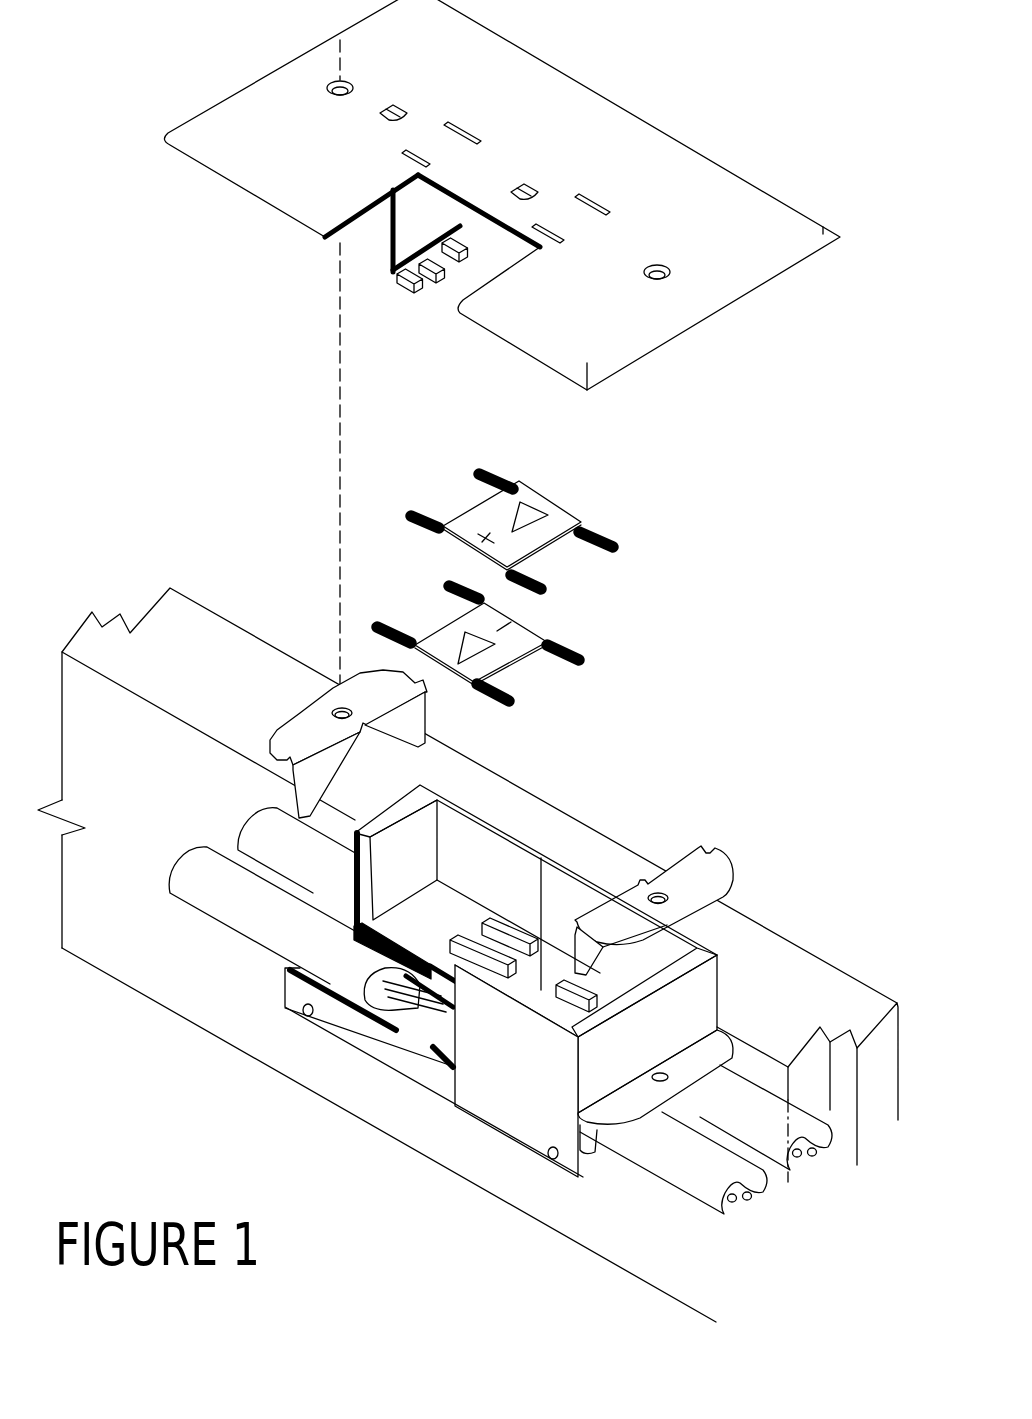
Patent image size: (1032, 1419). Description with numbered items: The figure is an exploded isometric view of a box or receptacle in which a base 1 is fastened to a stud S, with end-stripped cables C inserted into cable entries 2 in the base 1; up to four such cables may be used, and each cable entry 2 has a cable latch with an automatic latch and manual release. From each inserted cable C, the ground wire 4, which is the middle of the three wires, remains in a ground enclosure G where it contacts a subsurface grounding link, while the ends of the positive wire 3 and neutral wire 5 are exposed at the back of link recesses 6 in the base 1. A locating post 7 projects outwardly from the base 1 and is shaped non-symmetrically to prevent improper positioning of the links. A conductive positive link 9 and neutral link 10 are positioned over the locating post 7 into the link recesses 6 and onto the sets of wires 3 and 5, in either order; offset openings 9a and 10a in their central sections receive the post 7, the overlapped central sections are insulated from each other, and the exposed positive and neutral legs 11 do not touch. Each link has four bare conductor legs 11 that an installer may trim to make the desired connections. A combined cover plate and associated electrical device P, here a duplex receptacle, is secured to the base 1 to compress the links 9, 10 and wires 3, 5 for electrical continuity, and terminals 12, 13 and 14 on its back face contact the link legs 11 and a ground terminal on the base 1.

The base 1 is at (500, 1093).
The cable entries 2 is at (285, 973).
The positive wire 3 is at (387, 1002).
The ground wire 4 is at (410, 1000).
The neutral wire 5 is at (432, 997).
The link recesses 6 is at (493, 937).
The locating post 7 is at (522, 983).
The positive link 9 is at (517, 516).
The offset opening 9a is at (527, 514).
The neutral link 10 is at (493, 628).
The offset opening 10a is at (473, 648).
The conductor legs 11 is at (543, 590).
The terminal 12 is at (410, 276).
The terminal 13 is at (437, 268).
The terminal 14 is at (460, 256).
The cover plate and associated electrical device P is at (700, 281).
The stud S is at (218, 650).
The cables C is at (198, 887).
The ground enclosure G is at (435, 1022).